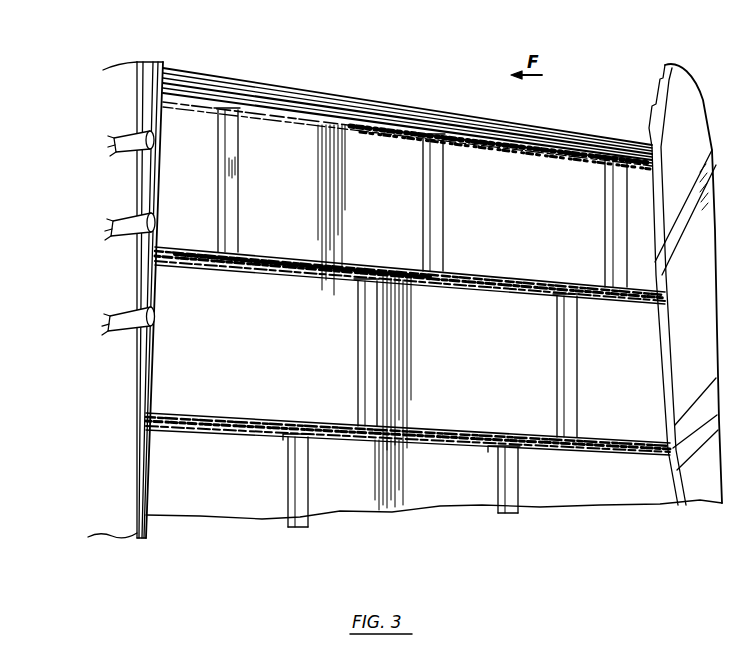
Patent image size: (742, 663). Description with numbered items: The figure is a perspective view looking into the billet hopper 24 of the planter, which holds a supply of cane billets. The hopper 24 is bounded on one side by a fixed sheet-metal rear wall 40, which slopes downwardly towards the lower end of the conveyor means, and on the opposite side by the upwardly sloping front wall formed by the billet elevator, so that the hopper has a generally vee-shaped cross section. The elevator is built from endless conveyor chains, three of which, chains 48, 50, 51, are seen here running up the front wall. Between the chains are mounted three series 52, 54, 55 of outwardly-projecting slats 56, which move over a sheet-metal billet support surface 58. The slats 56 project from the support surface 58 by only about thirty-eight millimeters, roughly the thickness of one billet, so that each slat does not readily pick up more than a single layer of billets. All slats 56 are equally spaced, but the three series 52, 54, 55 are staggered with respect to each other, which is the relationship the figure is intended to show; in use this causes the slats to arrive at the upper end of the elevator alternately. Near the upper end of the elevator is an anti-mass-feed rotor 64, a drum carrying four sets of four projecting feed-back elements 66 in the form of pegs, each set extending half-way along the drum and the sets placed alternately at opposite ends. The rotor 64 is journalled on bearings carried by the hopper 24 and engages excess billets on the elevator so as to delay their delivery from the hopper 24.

The hopper 24 is at (265, 536).
The rear wall 40 is at (700, 507).
The chain 48 is at (283, 420).
The chain 50 is at (297, 277).
The chain 51 is at (382, 133).
The series of slats 52 is at (190, 470).
The series of slats 54 is at (215, 353).
The series of slats 55 is at (197, 131).
The slat 56 is at (440, 177).
The billet support surface 58 is at (258, 128).
The rotor 64 is at (152, 62).
The feed-back elements 66 is at (135, 150).